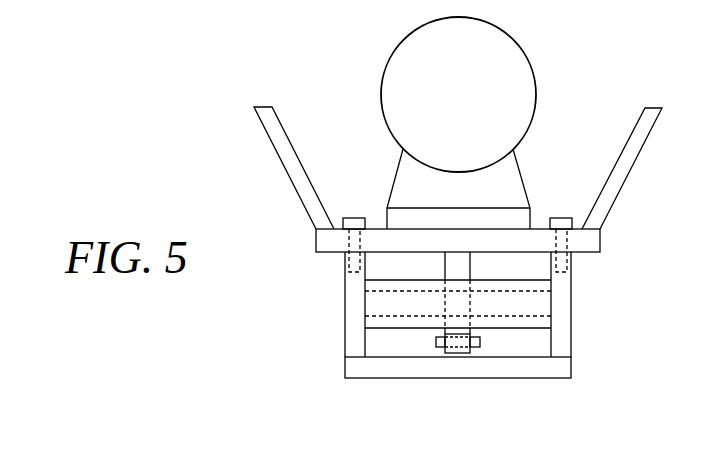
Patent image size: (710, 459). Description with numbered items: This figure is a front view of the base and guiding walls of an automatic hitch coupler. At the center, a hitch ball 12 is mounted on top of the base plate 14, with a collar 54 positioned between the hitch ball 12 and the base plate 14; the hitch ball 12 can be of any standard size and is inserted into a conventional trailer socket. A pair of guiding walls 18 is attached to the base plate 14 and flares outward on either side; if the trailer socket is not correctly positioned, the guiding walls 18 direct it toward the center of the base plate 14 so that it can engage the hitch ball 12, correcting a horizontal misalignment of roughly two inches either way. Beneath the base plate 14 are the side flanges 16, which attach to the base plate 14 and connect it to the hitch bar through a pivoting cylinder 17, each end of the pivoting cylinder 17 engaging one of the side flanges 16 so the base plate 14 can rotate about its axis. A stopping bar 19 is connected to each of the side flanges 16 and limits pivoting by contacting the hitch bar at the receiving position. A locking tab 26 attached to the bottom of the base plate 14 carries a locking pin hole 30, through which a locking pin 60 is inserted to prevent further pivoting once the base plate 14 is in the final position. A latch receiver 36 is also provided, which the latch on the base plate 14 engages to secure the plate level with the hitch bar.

The hitch ball 12 is at (478, 100).
The collar 54 is at (440, 200).
The base plate 14 is at (593, 243).
The guiding walls 18 is at (278, 133).
The latch receiver 36 is at (350, 218).
The side flanges 16 is at (352, 337).
The stopping bar 19 is at (405, 372).
The pivoting cylinder 17 is at (540, 303).
The locking tab 26 is at (462, 270).
The locking pin hole 30 is at (465, 351).
The locking pin 60 is at (437, 341).